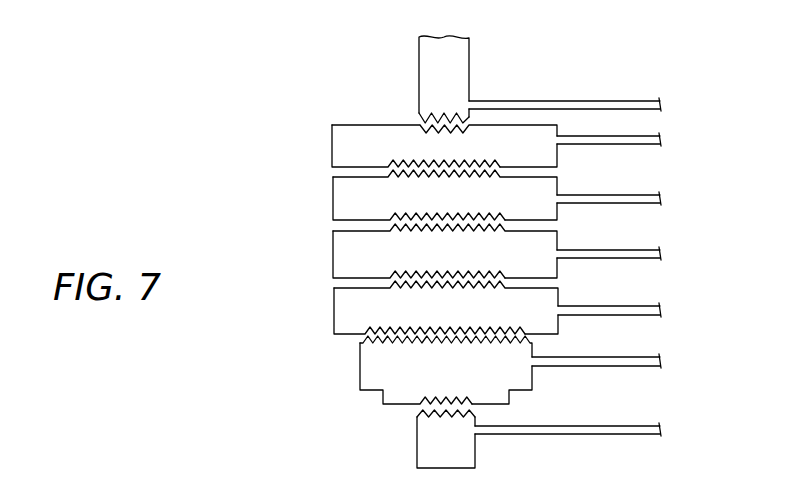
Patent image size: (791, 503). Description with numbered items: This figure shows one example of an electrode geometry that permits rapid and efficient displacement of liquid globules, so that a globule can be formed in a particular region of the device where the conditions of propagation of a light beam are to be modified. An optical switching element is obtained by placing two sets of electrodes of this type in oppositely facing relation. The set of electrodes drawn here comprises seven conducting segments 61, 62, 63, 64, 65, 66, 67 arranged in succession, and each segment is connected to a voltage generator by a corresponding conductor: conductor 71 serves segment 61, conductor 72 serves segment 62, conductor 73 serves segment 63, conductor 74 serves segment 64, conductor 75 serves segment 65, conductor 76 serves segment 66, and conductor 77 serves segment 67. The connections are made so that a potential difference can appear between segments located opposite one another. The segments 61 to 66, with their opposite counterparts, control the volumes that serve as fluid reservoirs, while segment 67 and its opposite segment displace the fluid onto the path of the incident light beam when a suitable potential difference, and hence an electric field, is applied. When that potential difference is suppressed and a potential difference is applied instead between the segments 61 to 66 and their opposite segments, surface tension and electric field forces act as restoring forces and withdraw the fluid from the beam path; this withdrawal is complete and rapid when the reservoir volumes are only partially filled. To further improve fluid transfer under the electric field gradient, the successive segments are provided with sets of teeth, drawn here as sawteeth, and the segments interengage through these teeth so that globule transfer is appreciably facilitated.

The conducting segment 61 is at (461, 65).
The conducting segment 62 is at (336, 142).
The conducting segment 63 is at (338, 196).
The conducting segment 64 is at (338, 258).
The conducting segment 65 is at (338, 313).
The conducting segment 66 is at (364, 376).
The conducting segment 67 is at (418, 452).
The conductor 71 is at (600, 101).
The conductor 72 is at (590, 145).
The conductor 73 is at (590, 203).
The conductor 74 is at (590, 258).
The conductor 75 is at (597, 315).
The conductor 76 is at (597, 366).
The conductor 77 is at (595, 434).